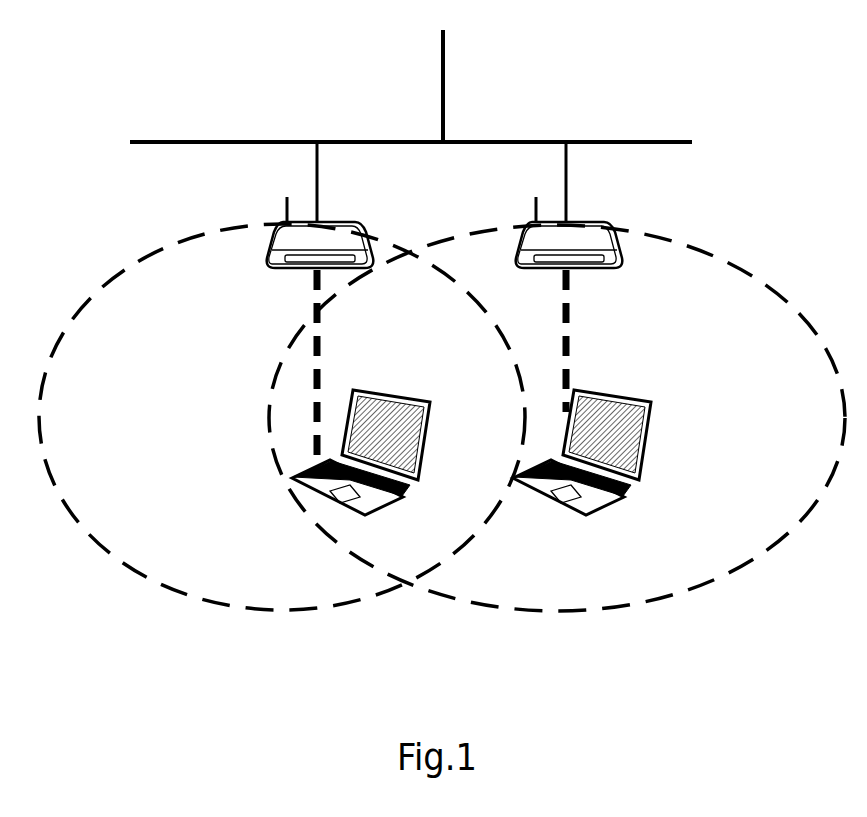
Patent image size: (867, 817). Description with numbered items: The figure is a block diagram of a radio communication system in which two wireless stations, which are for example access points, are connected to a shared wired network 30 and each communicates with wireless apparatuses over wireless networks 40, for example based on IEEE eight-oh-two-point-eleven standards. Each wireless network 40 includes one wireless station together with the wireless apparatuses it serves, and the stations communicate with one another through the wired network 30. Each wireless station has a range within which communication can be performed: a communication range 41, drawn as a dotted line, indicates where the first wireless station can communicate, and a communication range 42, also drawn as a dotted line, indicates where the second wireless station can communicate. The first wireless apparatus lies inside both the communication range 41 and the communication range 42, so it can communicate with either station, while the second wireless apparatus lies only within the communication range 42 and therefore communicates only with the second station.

The wired network 30 is at (657, 142).
The wireless network 40 is at (323, 358).
The communication range 41 is at (106, 553).
The communication range 42 is at (746, 562).